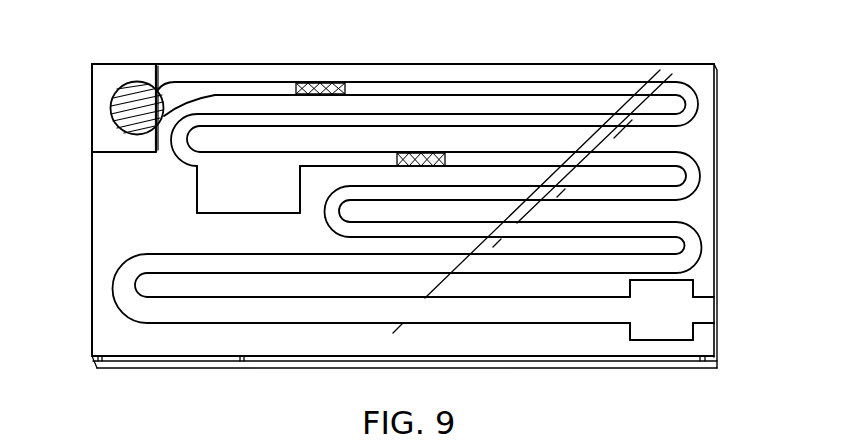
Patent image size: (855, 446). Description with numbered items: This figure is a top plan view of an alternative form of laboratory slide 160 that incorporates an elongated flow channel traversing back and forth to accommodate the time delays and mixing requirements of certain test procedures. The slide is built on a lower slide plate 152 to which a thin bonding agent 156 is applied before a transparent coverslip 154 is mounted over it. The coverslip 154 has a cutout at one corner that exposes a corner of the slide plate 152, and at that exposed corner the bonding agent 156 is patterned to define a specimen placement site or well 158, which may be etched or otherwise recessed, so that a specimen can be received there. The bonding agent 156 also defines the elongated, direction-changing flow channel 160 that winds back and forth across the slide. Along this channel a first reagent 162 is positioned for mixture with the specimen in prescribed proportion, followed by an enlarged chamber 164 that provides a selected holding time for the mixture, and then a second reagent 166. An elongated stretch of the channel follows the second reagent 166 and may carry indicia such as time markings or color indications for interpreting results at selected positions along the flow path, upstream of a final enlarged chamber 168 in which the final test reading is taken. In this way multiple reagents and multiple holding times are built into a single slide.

The lower slide plate 152 is at (112, 63).
The transparent coverslip 154 is at (462, 73).
The bonding agent 156 is at (148, 69).
The specimen placement site or well 158 is at (121, 109).
The laboratory slide / flow channel 160 is at (553, 93).
The first reagent 162 is at (329, 83).
The enlarged chamber 164 is at (199, 181).
The second reagent 166 is at (436, 160).
The final enlarged chamber 168 is at (671, 329).